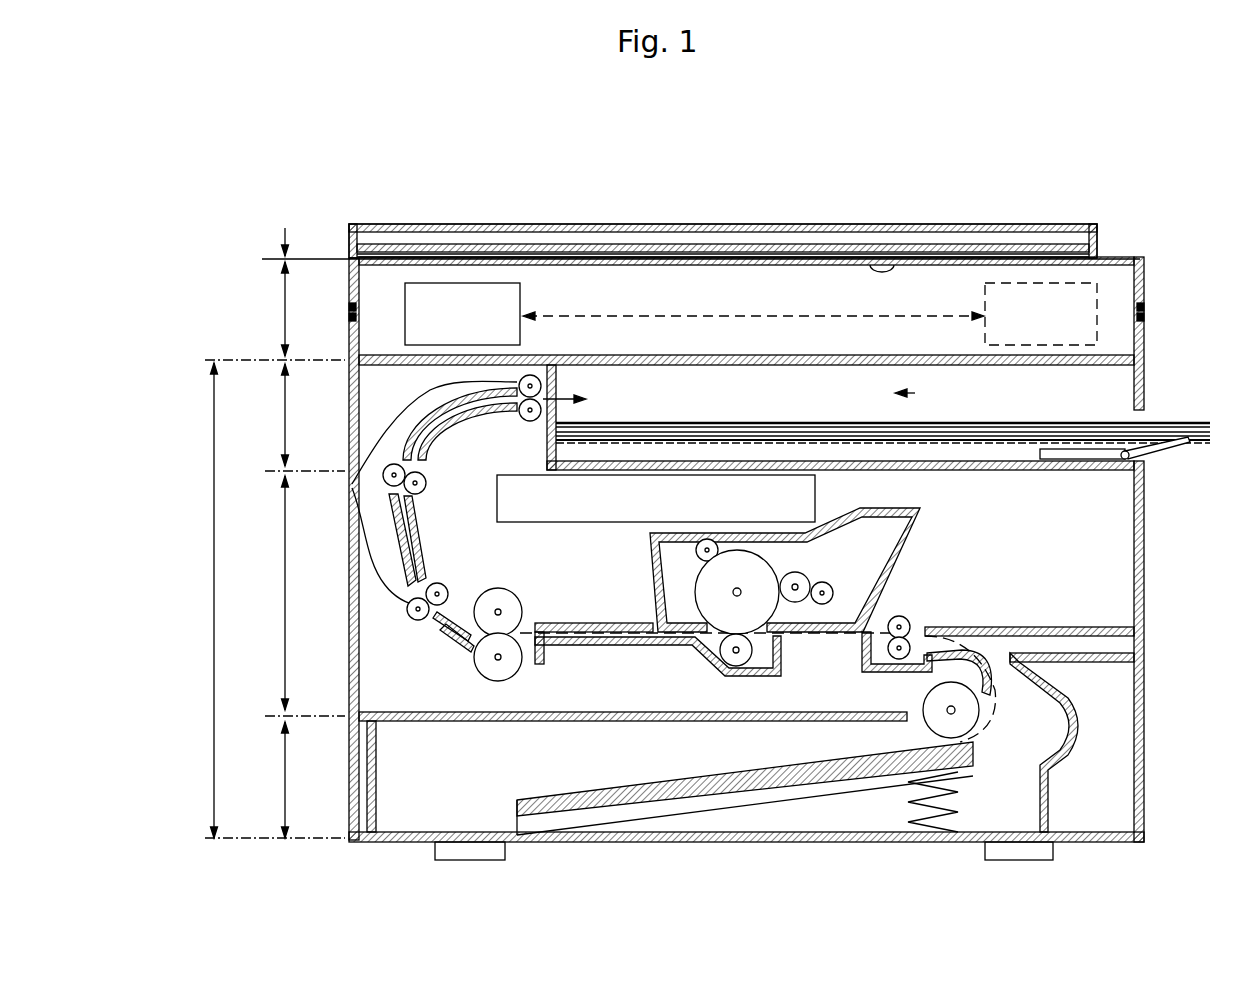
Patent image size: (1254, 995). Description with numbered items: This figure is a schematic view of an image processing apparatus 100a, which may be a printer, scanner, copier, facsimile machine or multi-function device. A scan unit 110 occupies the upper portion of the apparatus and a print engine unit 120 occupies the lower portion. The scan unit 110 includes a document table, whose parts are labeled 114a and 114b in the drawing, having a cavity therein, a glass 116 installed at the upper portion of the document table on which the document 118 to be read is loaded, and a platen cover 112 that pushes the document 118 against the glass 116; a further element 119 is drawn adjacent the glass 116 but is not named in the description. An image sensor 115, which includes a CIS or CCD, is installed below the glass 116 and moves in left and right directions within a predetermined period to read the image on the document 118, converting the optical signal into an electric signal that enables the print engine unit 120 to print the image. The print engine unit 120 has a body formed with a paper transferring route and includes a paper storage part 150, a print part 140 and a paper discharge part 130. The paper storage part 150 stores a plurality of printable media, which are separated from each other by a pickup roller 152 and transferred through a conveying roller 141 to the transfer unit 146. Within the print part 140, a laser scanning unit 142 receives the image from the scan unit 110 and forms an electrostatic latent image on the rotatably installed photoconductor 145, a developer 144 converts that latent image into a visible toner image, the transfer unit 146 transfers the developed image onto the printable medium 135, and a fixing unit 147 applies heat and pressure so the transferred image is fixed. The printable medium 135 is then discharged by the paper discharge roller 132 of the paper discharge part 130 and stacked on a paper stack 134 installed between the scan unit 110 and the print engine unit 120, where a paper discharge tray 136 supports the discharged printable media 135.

The image processing apparatus 100a is at (680, 123).
The scan unit 110 is at (285, 307).
The platen cover 112 is at (730, 240).
The first hinge 114a is at (1148, 336).
The second hinge 114b is at (1148, 287).
The image sensor 115 is at (418, 303).
The glass 116 is at (893, 262).
The document 118 is at (998, 248).
The document 119 is at (952, 250).
The print engine unit 120 is at (214, 618).
The paper discharge part 130 is at (285, 415).
The paper discharge roller 132 is at (404, 488).
The paper stack 134 is at (918, 392).
The printable medium 135 is at (1191, 418).
The paper discharge tray 136 is at (1166, 456).
The print part 140 is at (285, 595).
The conveying roller 141 is at (912, 622).
The laser scanning unit 142 is at (815, 497).
The developer 144 is at (880, 550).
The photoconductor 145 is at (705, 592).
The transfer unit 146 is at (720, 655).
The fixing unit 147 is at (505, 597).
The paper storage part 150 is at (285, 783).
The pickup roller 152 is at (930, 700).